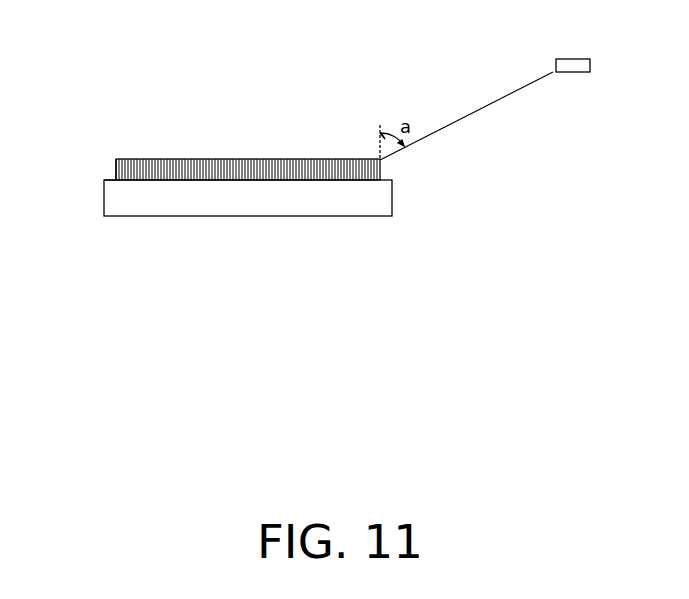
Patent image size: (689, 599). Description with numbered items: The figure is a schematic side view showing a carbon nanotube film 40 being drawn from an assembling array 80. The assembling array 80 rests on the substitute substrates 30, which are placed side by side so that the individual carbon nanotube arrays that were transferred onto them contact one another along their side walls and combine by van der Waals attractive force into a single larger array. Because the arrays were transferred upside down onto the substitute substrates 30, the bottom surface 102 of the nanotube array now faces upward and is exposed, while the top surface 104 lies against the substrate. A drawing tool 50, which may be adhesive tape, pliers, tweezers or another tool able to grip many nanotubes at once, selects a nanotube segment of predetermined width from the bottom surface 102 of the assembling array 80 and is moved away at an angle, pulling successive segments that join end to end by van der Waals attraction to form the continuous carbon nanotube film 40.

The substitute substrate 30 is at (375, 203).
The carbon nanotube film 40 is at (470, 115).
The drawing tool 50 is at (582, 60).
The assembling array 80 is at (272, 160).
The bottom surface 102 is at (118, 159).
The top surface 104 is at (118, 182).